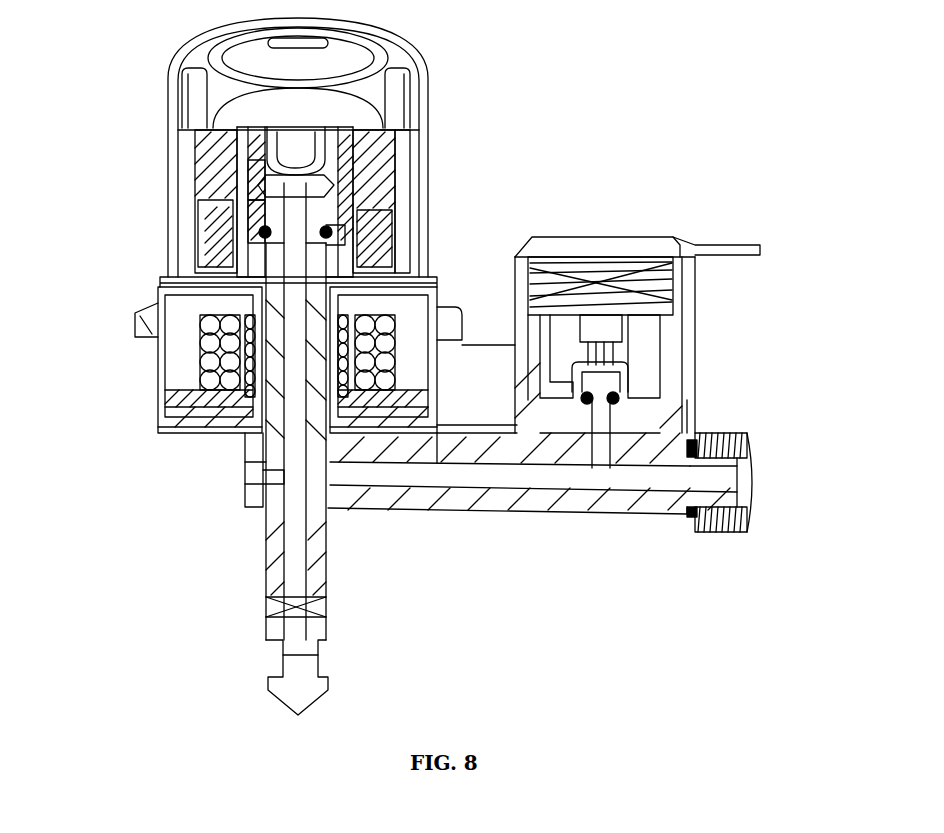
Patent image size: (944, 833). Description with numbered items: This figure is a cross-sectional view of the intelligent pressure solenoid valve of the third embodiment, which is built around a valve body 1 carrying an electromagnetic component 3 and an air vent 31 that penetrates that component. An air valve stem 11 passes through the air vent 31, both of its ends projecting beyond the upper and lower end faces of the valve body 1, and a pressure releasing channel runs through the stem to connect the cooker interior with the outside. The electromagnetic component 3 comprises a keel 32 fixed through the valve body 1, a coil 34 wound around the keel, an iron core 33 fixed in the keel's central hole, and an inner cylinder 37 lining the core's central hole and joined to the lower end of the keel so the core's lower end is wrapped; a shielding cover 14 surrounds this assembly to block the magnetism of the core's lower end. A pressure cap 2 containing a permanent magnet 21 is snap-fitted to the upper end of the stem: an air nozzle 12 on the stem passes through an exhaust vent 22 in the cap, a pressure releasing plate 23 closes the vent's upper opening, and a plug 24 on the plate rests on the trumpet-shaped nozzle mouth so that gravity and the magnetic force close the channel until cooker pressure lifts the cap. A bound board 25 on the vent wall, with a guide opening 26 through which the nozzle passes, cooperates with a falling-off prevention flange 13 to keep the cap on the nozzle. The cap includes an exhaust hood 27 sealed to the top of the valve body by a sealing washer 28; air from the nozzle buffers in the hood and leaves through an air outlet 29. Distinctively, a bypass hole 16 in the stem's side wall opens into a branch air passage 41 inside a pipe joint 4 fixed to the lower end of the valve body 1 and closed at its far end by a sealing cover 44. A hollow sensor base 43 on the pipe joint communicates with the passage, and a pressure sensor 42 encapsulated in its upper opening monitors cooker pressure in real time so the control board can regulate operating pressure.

The valve body 1 is at (262, 432).
The pressure cap 2 is at (262, 152).
The electromagnetic component 3 is at (183, 332).
The pipe joint 4 is at (407, 498).
The air valve stem 11 is at (282, 648).
The air nozzle 12 is at (250, 230).
The falling-off prevention flange 13 is at (355, 183).
The shielding cover 14 is at (222, 415).
The bypass hole 16 is at (323, 469).
The permanent magnet 21 is at (265, 205).
The exhaust vent 22 is at (262, 180).
The pressure releasing plate 23 is at (250, 118).
The plug 24 is at (392, 130).
The bound board 25 is at (360, 233).
The guide opening 26 is at (255, 250).
The exhaust hood 27 is at (410, 68).
The sealing washer 28 is at (262, 282).
The air outlet 29 is at (186, 57).
The air vent 31 is at (300, 318).
The keel 32 is at (183, 310).
The iron core 33 is at (222, 368).
The coil 34 is at (210, 348).
The inner cylinder 37 is at (240, 384).
The branch air passage 41 is at (505, 476).
The pressure sensor 42 is at (690, 274).
The sensor base 43 is at (690, 343).
The sealing cover 44 is at (747, 444).